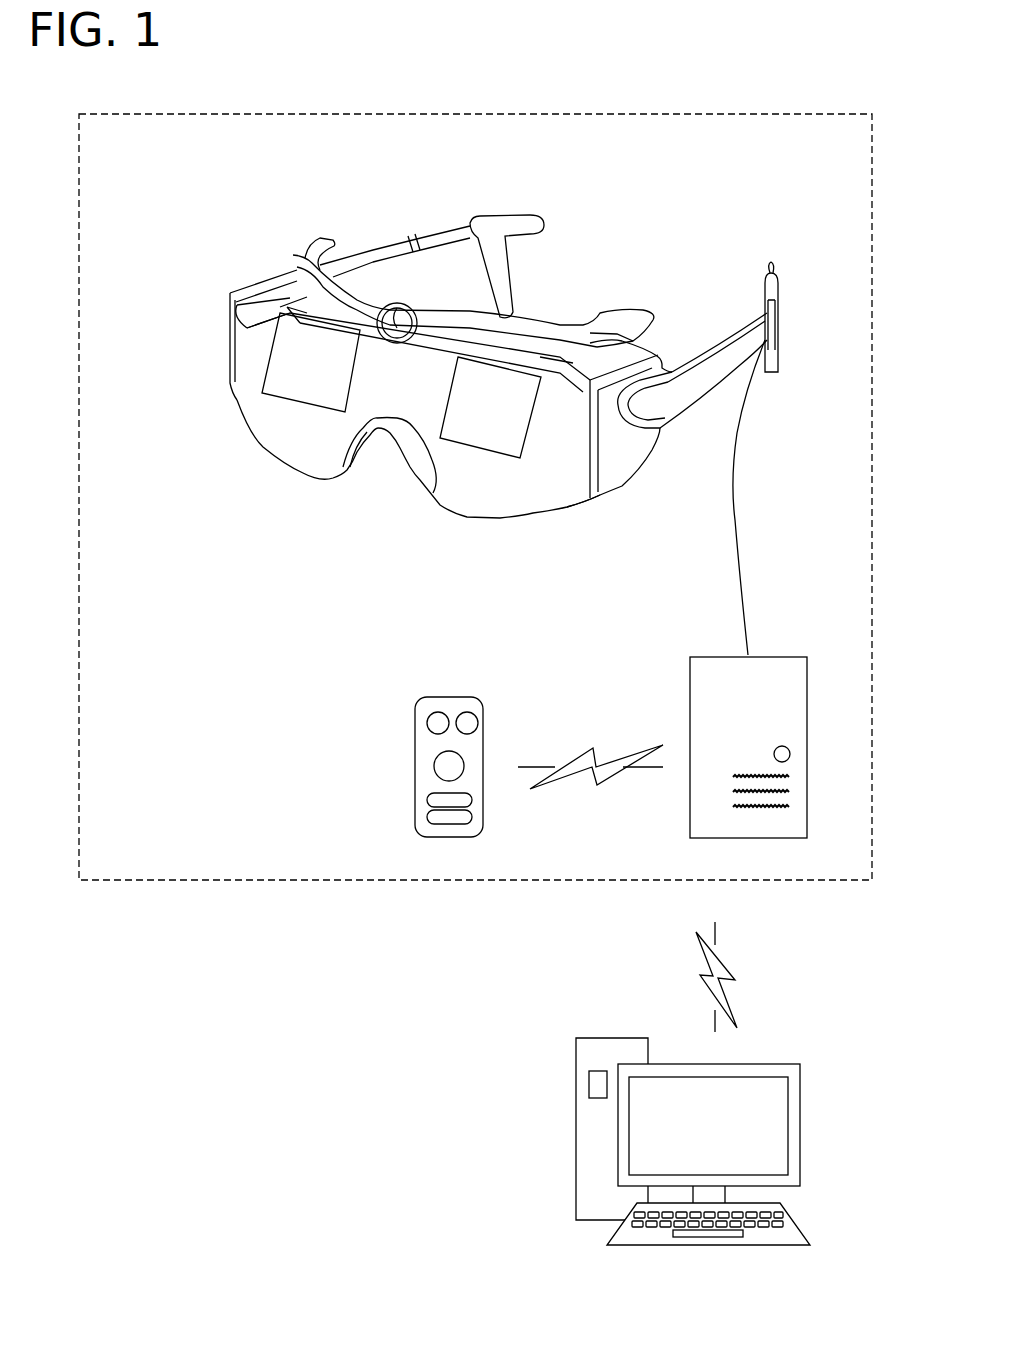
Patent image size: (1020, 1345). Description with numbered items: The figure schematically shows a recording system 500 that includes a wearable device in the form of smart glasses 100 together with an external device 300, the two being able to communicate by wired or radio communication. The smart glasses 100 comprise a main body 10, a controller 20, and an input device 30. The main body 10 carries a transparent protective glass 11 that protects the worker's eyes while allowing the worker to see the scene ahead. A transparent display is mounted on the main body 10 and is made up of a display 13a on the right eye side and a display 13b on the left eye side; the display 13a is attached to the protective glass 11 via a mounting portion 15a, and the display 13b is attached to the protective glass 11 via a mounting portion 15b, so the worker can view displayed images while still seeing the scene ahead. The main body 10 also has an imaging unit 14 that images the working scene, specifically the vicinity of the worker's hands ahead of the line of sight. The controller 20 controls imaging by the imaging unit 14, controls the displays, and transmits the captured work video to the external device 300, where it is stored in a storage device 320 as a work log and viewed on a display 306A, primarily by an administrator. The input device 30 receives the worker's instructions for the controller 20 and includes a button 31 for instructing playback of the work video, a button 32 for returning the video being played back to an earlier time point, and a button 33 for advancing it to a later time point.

The recording system 500 is at (889, 74).
The smart glasses 100 is at (810, 114).
The main body 10 is at (586, 214).
The protective glass 11 is at (552, 499).
The display on the right eye side 13a is at (298, 387).
The display on the left eye side 13b is at (488, 433).
The imaging unit 14 is at (400, 300).
The mounting portion on the right eye side 15a is at (287, 307).
The mounting portion on the left eye side 15b is at (517, 382).
The controller 20 is at (777, 657).
The input device 30 is at (460, 697).
The button 31 is at (446, 767).
The button 32 is at (428, 723).
The button 33 is at (477, 723).
The external device 300 is at (770, 1063).
The display 306A is at (775, 1132).
The storage device 320 is at (588, 1084).